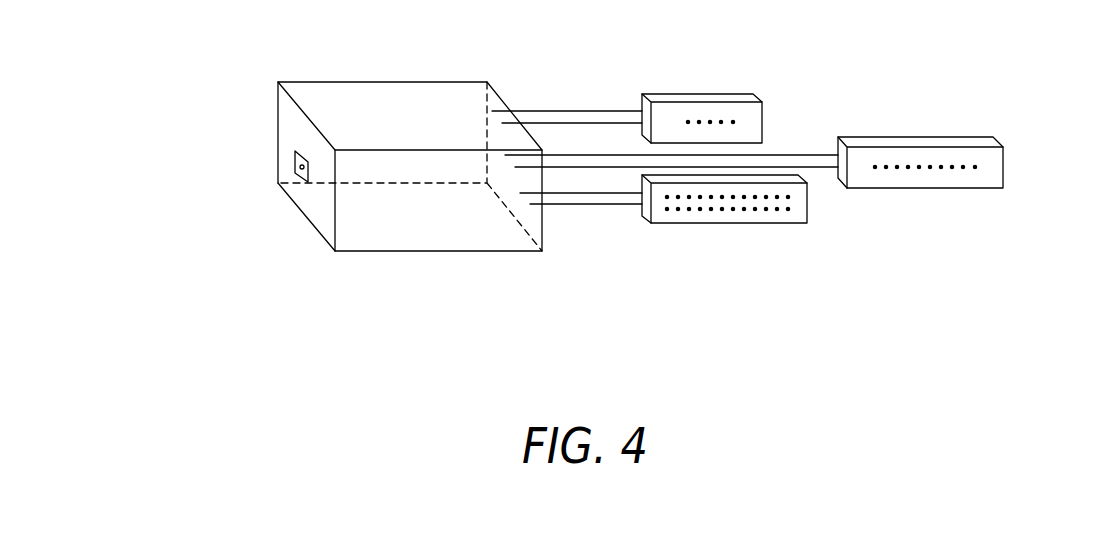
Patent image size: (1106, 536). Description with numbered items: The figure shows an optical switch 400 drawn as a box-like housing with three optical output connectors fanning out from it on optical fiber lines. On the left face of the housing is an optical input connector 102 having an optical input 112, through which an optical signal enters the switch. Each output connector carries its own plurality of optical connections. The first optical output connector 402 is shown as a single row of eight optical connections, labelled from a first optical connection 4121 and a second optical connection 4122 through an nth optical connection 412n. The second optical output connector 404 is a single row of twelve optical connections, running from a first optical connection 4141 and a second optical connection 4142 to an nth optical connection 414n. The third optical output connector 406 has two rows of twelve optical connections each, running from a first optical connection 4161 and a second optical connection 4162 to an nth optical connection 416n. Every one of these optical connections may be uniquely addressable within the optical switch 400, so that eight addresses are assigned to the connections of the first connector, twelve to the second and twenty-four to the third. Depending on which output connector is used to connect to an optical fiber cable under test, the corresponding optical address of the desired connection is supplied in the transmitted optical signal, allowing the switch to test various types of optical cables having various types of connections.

The optical switch 400 is at (438, 253).
The optical input 112 is at (300, 165).
The optical input connector 102 is at (303, 180).
The first optical output connector 402 is at (760, 93).
The second optical output connector 404 is at (998, 140).
The third optical output connector 406 is at (808, 204).
The first optical connection of the first plurality 4121 is at (667, 123).
The second optical connection of the first plurality 4122 is at (678, 124).
The nth optical connection of the first plurality 412n is at (745, 122).
The first optical connection of the second plurality 4141 is at (865, 167).
The second optical connection of the second plurality 4142 is at (873, 165).
The nth optical connection of the second plurality 414n is at (985, 166).
The first optical connection of the third plurality 4161 is at (667, 197).
The second optical connection of the third plurality 4162 is at (680, 198).
The nth optical connection of the third plurality 416n is at (788, 211).